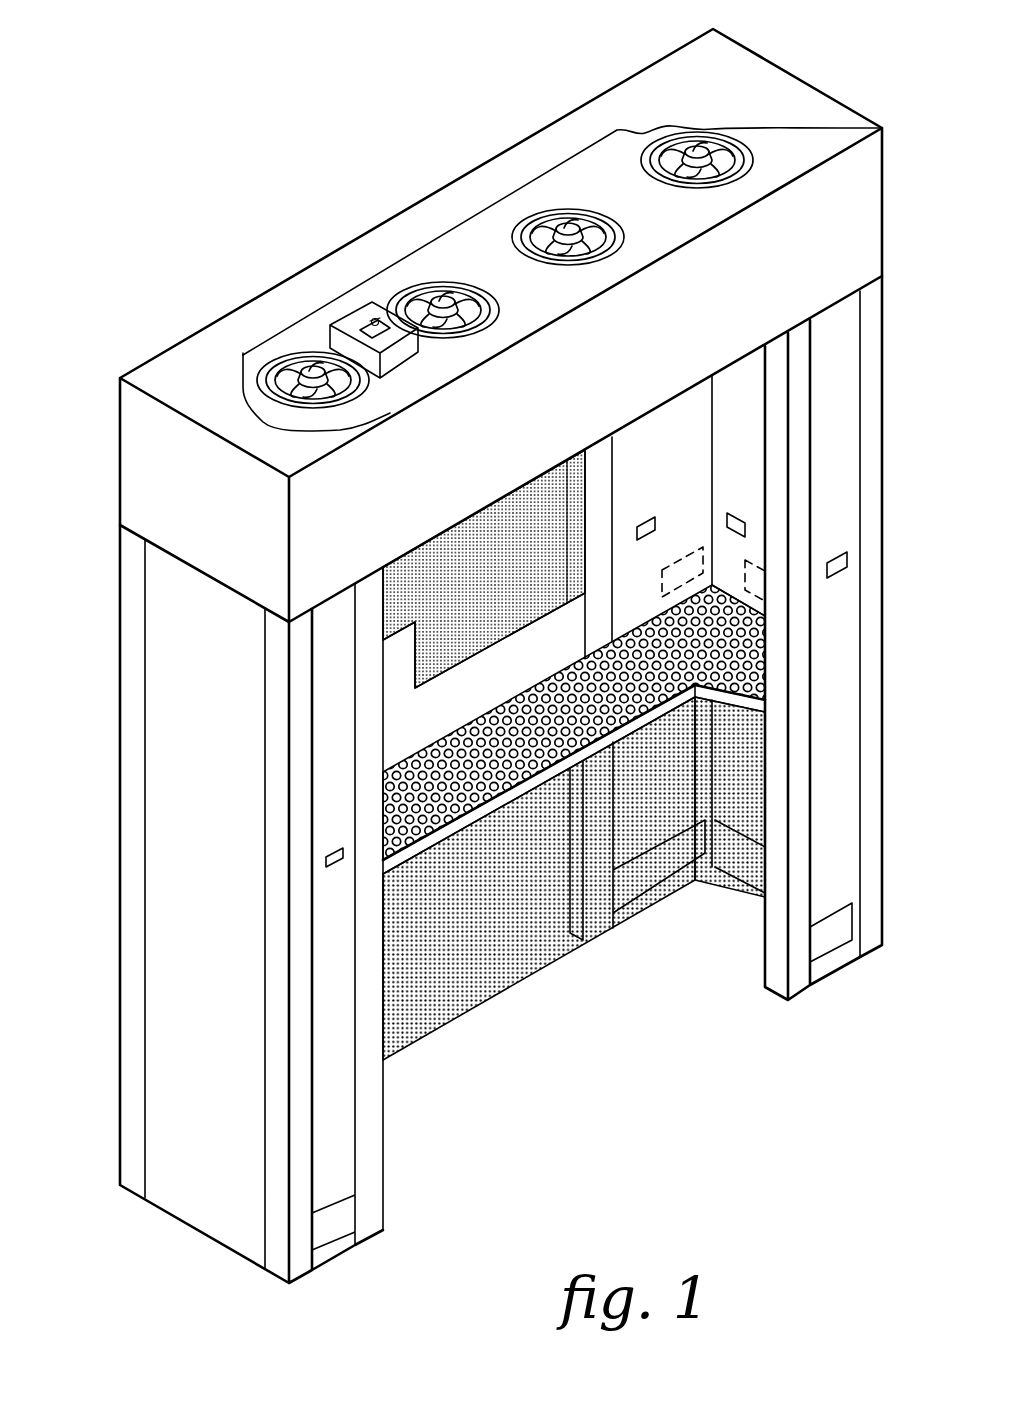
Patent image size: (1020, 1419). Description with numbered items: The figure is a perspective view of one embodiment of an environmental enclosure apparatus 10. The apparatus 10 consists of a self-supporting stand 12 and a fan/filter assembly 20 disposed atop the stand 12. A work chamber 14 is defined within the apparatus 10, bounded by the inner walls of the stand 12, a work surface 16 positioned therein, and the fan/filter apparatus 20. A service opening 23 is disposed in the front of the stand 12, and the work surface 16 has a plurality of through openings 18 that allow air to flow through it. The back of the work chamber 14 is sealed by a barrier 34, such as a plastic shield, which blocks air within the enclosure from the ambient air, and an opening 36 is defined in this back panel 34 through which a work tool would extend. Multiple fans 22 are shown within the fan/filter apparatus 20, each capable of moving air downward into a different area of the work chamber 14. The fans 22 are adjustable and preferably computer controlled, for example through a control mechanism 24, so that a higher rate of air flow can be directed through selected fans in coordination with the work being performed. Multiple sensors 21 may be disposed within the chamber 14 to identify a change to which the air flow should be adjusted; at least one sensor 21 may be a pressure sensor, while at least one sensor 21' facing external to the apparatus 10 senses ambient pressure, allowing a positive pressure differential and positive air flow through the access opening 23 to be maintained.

The environmental enclosure apparatus 10 is at (102, 650).
The self-supporting stand 12 is at (108, 572).
The work chamber 14 is at (672, 458).
The work surface 16 is at (445, 738).
The through openings 18 is at (651, 622).
The fan/filter assembly 20 is at (108, 409).
The sensors 21 is at (691, 504).
The sensor 21' is at (591, 666).
The fans 22 is at (643, 152).
The service opening 23 is at (590, 1045).
The control mechanism 24 is at (395, 364).
The barrier 34 is at (500, 590).
The opening 36 is at (530, 680).